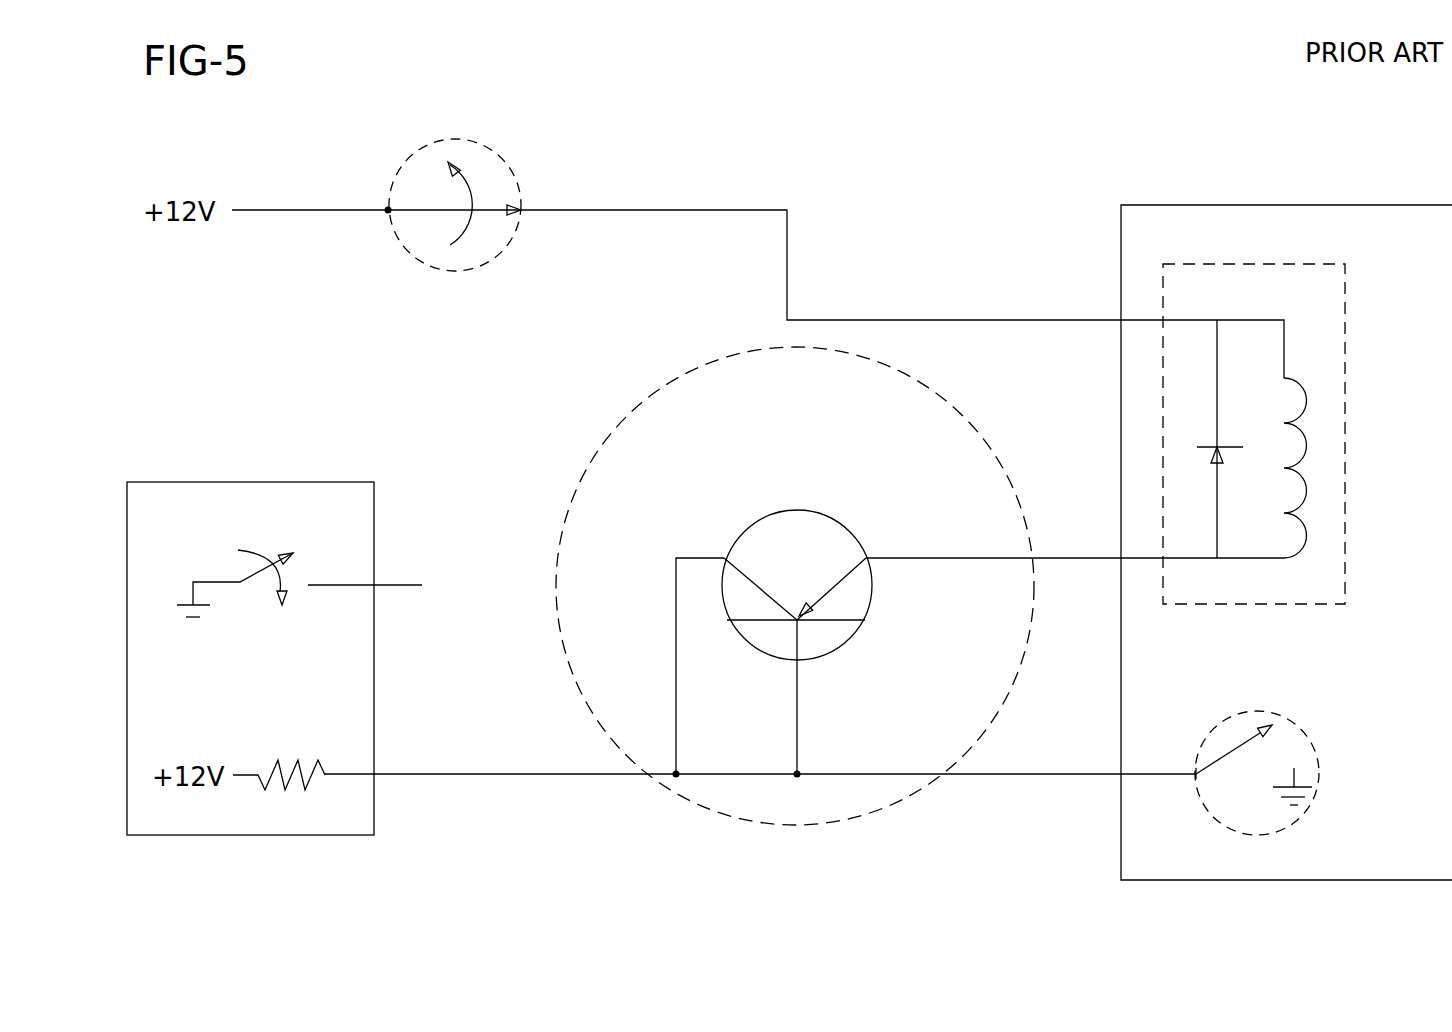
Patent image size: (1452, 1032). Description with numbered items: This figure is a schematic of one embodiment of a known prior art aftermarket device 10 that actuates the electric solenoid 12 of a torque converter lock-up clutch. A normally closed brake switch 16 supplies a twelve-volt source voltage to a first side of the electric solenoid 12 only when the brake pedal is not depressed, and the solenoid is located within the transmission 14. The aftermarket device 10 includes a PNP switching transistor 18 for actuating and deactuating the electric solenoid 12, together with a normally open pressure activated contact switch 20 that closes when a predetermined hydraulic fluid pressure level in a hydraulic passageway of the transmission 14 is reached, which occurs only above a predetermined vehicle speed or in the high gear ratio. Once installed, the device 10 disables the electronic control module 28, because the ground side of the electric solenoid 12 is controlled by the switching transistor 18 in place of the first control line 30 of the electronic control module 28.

The aftermarket device 10 is at (625, 797).
The electric solenoid 12 is at (1233, 253).
The transmission 14 is at (1105, 277).
The brake switch 16 is at (510, 165).
The PNP switching transistor 18 is at (792, 510).
The pressure activated contact switch 20 is at (1300, 728).
The electronic control module 28 is at (374, 505).
The first control line 30 is at (405, 585).